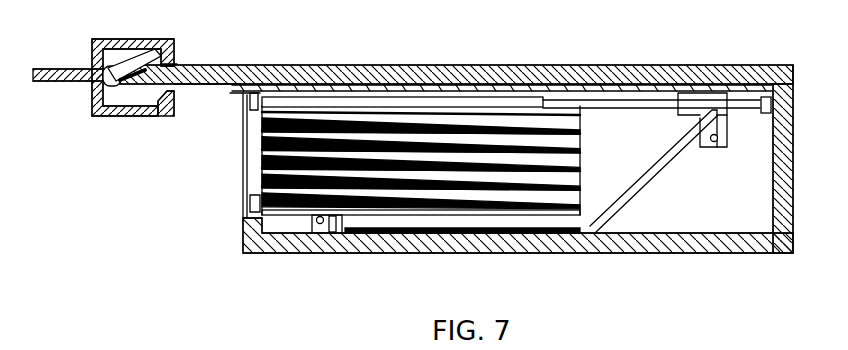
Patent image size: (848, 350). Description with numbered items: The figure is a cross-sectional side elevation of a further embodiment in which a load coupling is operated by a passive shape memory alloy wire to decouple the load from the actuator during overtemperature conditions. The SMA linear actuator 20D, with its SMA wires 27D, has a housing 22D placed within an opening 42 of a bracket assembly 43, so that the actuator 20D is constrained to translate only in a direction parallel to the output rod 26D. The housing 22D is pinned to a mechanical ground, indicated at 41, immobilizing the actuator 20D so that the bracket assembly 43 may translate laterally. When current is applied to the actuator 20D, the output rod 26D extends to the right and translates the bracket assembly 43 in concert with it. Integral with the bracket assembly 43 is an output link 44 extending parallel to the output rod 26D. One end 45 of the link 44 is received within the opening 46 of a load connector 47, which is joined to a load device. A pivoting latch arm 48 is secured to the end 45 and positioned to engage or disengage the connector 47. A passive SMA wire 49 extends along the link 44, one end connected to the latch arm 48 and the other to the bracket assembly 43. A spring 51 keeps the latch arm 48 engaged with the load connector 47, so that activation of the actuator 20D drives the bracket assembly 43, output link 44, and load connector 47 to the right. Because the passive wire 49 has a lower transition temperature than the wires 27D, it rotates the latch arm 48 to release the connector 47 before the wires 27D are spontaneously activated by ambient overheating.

The SMA linear actuator 20D is at (517, 175).
The housing 22D is at (673, 165).
The output rod 26D is at (754, 100).
The SMA wires 27D is at (404, 110).
The pin to mechanical ground 41 is at (717, 142).
The opening 42 is at (728, 227).
The bracket assembly 43 is at (380, 253).
The output link 44 is at (483, 65).
The end of output link 45 is at (197, 90).
The opening of load connector 46 is at (128, 96).
The load connector 47 is at (92, 106).
The pivoting latch arm 48 is at (153, 99).
The passive SMA wire 49 is at (577, 87).
The spring 51 is at (177, 64).